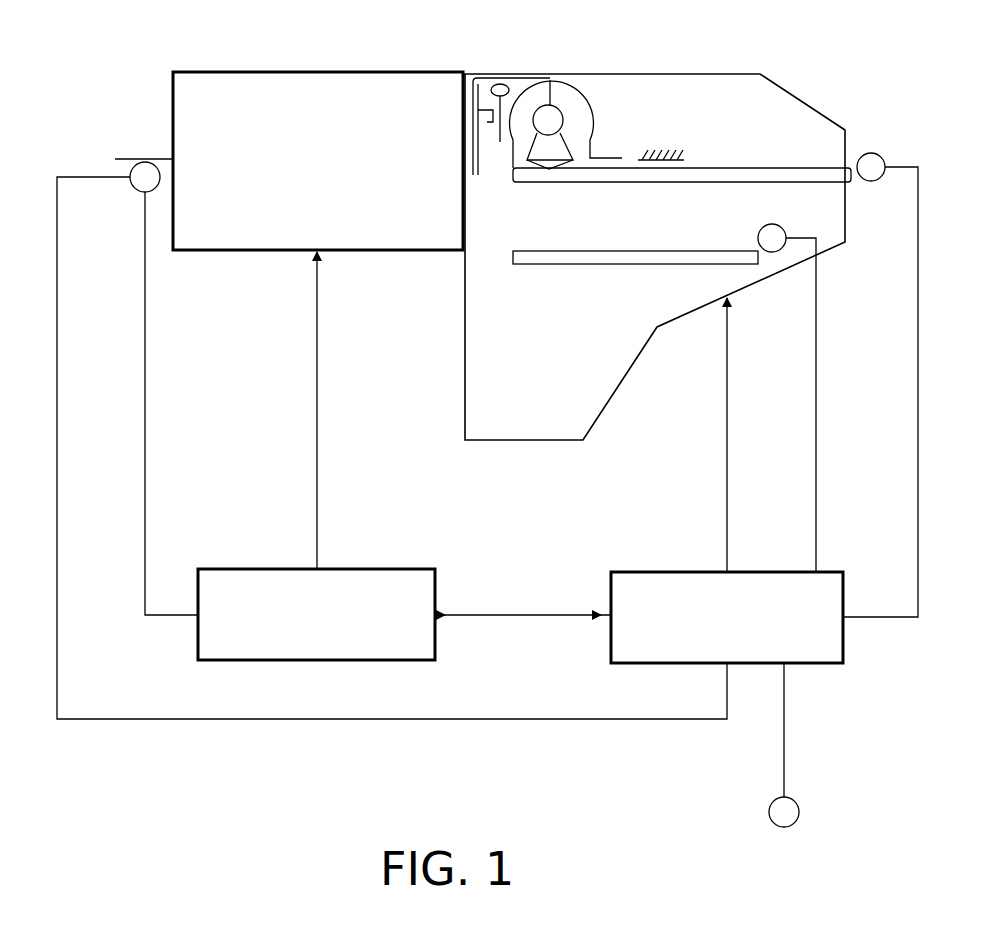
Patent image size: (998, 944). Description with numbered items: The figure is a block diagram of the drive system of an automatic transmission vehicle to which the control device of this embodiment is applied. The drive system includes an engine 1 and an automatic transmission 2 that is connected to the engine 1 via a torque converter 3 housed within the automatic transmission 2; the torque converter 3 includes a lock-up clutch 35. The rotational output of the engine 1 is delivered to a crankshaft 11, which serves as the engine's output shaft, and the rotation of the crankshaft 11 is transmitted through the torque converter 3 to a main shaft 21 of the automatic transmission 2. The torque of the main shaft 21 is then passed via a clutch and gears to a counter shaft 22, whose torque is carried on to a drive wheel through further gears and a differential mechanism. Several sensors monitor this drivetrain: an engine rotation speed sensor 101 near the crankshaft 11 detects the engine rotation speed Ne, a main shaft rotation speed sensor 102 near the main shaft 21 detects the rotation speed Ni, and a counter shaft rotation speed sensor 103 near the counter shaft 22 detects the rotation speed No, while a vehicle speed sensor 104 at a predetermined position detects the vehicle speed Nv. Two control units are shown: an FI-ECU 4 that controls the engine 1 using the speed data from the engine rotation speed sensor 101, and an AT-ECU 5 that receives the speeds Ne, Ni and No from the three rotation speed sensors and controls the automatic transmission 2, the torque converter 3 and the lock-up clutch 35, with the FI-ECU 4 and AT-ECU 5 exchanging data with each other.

The engine 1 is at (320, 72).
The automatic transmission 2 is at (685, 74).
The torque converter 3 is at (578, 74).
The lock-up clutch 35 is at (457, 98).
The main shaft 21 is at (710, 168).
The counter shaft 22 is at (527, 251).
The crankshaft 11 is at (146, 161).
The engine rotation speed sensor 101 is at (142, 195).
The main shaft rotation speed sensor 102 is at (870, 153).
The counter shaft rotation speed sensor 103 is at (818, 218).
The vehicle speed sensor 104 is at (793, 800).
The FI-ECU 4 is at (388, 569).
The AT-ECU 5 is at (690, 572).